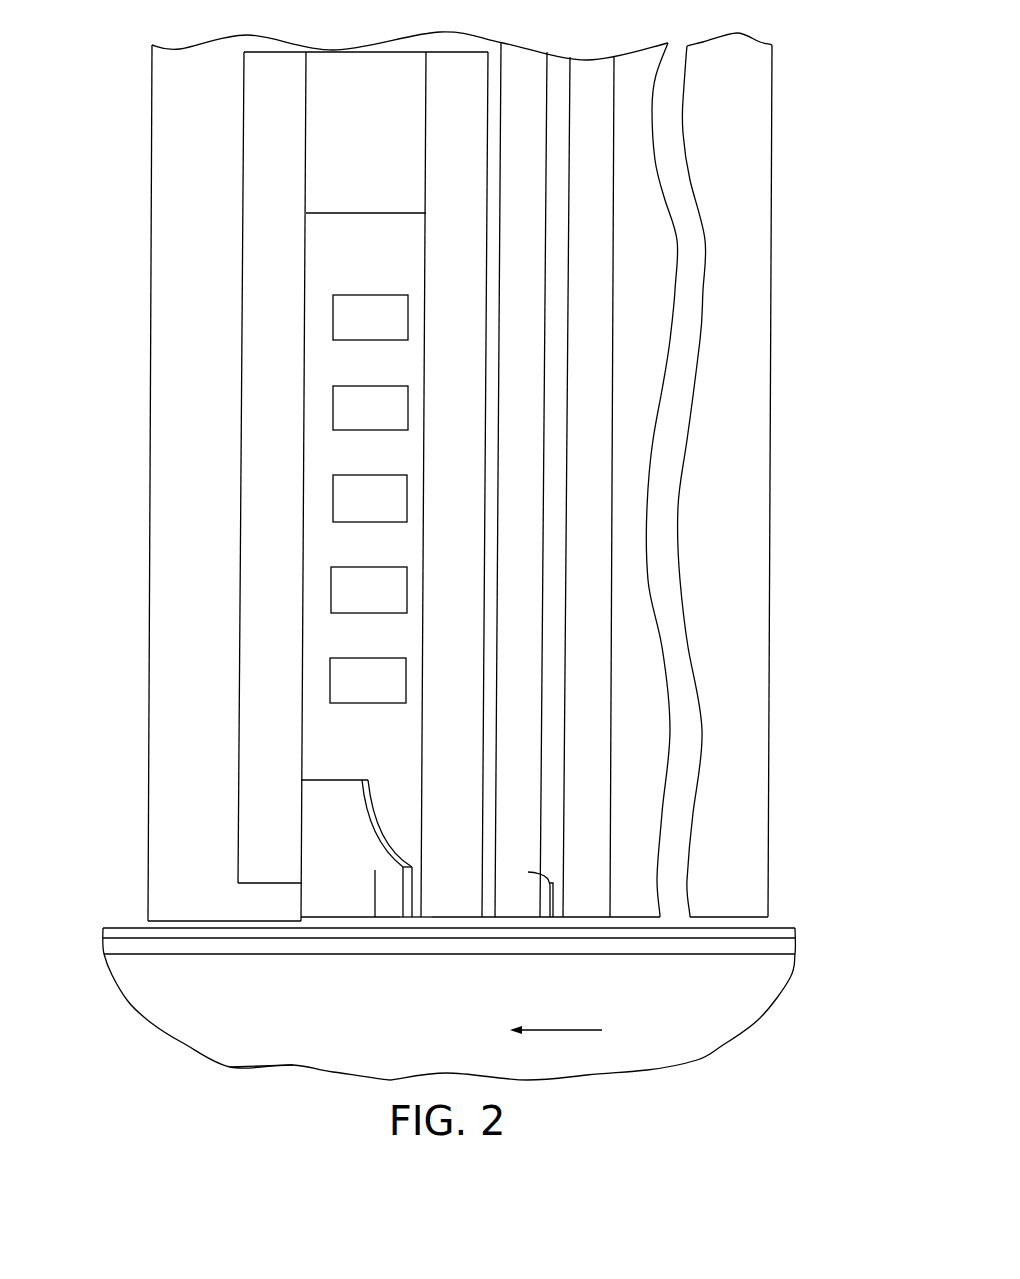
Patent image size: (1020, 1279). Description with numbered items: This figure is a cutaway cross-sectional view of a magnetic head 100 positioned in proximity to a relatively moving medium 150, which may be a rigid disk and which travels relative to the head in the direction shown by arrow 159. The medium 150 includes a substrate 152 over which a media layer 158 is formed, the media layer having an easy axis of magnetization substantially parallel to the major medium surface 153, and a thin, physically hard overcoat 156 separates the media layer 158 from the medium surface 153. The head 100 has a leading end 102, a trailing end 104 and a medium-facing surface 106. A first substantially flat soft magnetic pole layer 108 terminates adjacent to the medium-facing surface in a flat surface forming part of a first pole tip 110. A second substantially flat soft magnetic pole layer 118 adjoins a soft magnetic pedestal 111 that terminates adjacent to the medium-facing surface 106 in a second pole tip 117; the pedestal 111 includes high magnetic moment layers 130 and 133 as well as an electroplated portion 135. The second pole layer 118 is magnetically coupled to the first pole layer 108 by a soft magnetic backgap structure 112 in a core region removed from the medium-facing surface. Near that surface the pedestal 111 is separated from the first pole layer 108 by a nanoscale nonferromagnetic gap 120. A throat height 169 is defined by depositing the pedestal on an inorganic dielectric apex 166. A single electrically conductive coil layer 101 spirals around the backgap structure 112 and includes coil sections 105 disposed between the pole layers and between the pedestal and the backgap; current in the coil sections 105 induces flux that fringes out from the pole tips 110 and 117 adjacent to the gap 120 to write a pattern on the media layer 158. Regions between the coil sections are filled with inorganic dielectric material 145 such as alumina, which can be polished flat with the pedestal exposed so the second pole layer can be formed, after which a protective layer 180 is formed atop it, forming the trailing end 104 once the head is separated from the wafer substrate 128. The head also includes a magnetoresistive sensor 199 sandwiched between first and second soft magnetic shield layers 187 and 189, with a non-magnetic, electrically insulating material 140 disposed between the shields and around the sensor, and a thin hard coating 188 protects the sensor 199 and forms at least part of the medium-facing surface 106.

The magnetic head 100 is at (128, 48).
The coil layer 101 is at (372, 274).
The leading end 102 is at (781, 590).
The trailing end 104 is at (137, 590).
The coil sections 105 is at (408, 333).
The medium-facing surface 106 is at (268, 932).
The first pole layer 108 is at (435, 478).
The first pole tip 110 is at (448, 928).
The pedestal 111 is at (336, 803).
The backgap structure 112 is at (348, 148).
The second pole tip 117 is at (390, 928).
The second pole layer 118 is at (253, 511).
The nonferromagnetic gap 120 is at (416, 928).
The wafer substrate 128 is at (707, 514).
The high magnetic moment layer 130 is at (373, 828).
The high magnetic moment layer 133 is at (345, 808).
The electroplated portion 135 is at (308, 898).
The electrically insulating material 140 is at (560, 296).
The inorganic dielectric material 145 is at (345, 556).
The medium 150 is at (134, 1077).
The substrate 152 is at (401, 1044).
The medium surface 153 is at (116, 917).
The overcoat 156 is at (615, 938).
The media layer 158 is at (703, 954).
The arrow 159 is at (550, 1030).
The inorganic dielectric apex 166 is at (396, 864).
The throat height 169 is at (427, 870).
The protective layer 180 is at (177, 521).
The first shield layer 187 is at (569, 601).
The hard coating 188 is at (632, 913).
The second shield layer 189 is at (501, 601).
The magnetoresistive sensor 199 is at (527, 876).